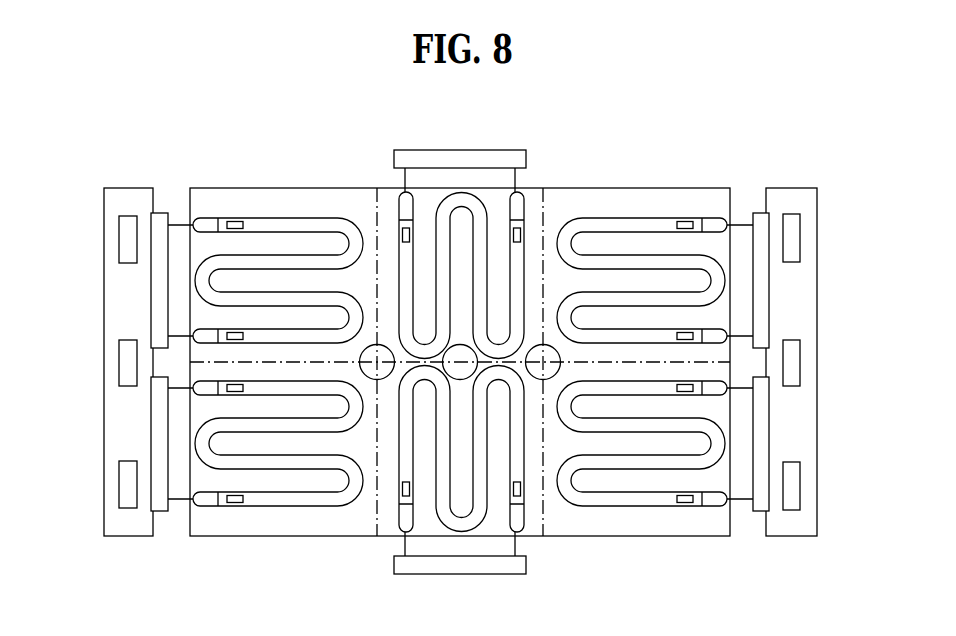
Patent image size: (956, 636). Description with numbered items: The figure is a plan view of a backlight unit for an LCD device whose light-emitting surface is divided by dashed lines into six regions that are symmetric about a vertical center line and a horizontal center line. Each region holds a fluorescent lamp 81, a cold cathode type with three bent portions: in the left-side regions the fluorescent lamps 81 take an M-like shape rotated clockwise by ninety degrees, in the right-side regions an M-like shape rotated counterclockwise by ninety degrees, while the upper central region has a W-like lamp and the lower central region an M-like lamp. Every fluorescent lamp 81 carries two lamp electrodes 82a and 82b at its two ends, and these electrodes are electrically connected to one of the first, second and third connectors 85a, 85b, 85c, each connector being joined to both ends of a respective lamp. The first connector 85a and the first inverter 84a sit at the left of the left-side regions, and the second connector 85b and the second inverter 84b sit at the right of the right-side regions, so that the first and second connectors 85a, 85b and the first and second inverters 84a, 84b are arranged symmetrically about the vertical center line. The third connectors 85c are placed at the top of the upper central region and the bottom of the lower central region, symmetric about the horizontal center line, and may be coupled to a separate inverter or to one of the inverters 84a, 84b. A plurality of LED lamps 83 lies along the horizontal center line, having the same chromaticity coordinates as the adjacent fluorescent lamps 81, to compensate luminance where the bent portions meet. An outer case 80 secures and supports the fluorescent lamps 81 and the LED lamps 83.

The outer case 80 is at (628, 187).
The fluorescent lamp 81 is at (333, 220).
The lamp electrode 82a is at (236, 221).
The lamp electrode 82b is at (235, 333).
The LED lamp 83 is at (461, 378).
The first inverter 84a is at (114, 328).
The second inverter 84b is at (805, 328).
The first connector 85a is at (157, 243).
The second connector 85b is at (762, 243).
The third connector 85c is at (461, 160).